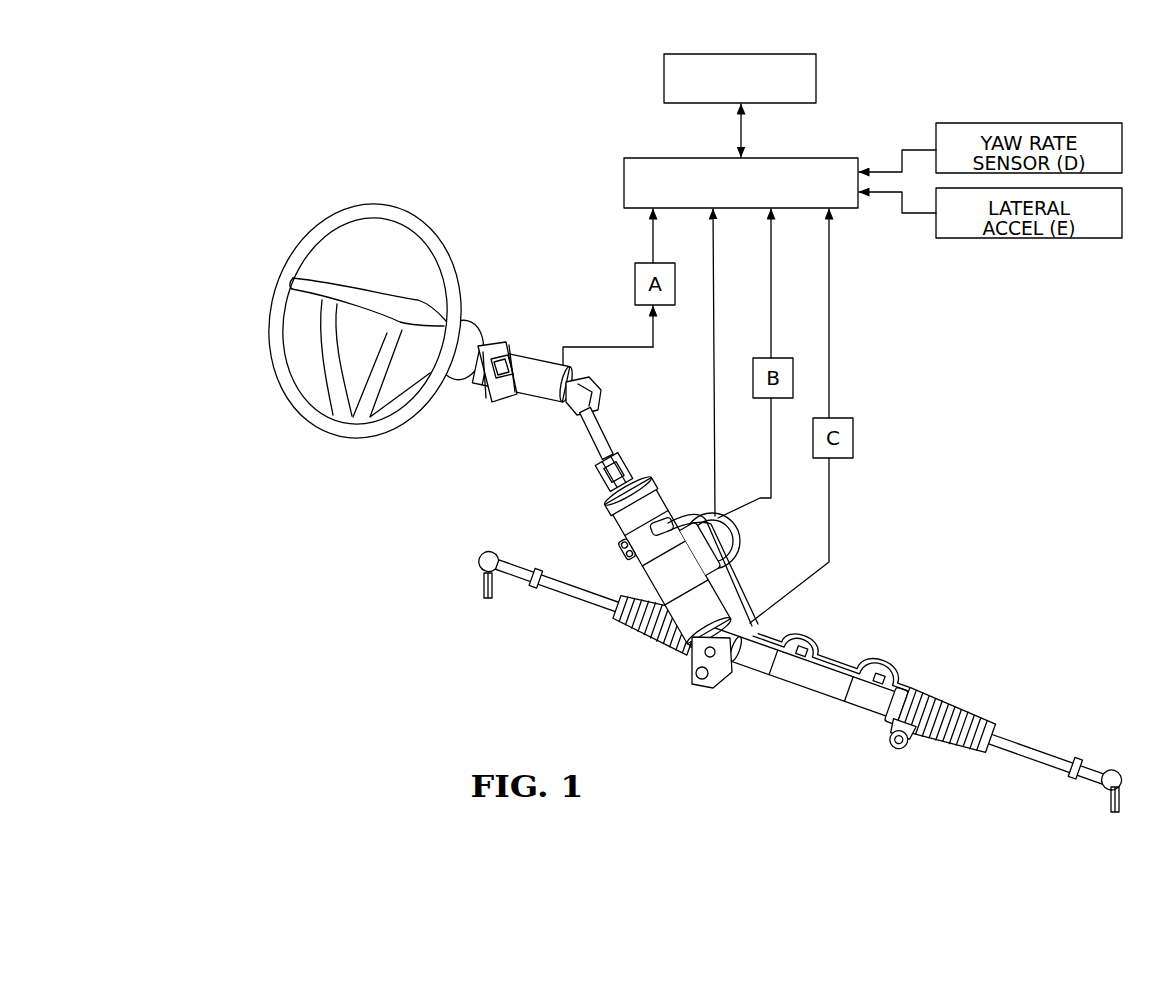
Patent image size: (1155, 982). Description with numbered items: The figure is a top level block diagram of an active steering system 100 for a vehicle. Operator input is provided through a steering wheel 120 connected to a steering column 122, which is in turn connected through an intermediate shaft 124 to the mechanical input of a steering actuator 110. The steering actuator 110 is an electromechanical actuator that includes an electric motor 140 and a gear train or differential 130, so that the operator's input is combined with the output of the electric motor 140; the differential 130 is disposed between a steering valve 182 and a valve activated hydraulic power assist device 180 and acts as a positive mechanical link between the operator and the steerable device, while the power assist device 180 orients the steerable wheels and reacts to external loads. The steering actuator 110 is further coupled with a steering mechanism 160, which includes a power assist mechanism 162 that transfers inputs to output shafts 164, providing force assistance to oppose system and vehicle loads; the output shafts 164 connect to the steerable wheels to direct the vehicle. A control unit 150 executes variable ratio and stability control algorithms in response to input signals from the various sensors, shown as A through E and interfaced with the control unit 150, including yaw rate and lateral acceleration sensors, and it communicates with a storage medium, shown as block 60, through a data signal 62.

The controller 60 is at (664, 75).
The data signal 62 is at (736, 125).
The active steering system 100 is at (388, 596).
The steering actuator 110 is at (622, 576).
The steering wheel 120 is at (342, 432).
The steering column 122 is at (527, 387).
The intermediate shaft 124 is at (600, 433).
The differential 130 is at (637, 587).
The electric motor 140 is at (735, 542).
The control unit 150 is at (630, 213).
The steering mechanism 160 is at (800, 679).
The power assist mechanism 162 is at (906, 620).
The output shafts 164 is at (595, 603).
The hydraulic power assist device 180 is at (776, 617).
The steering valve 182 is at (670, 498).